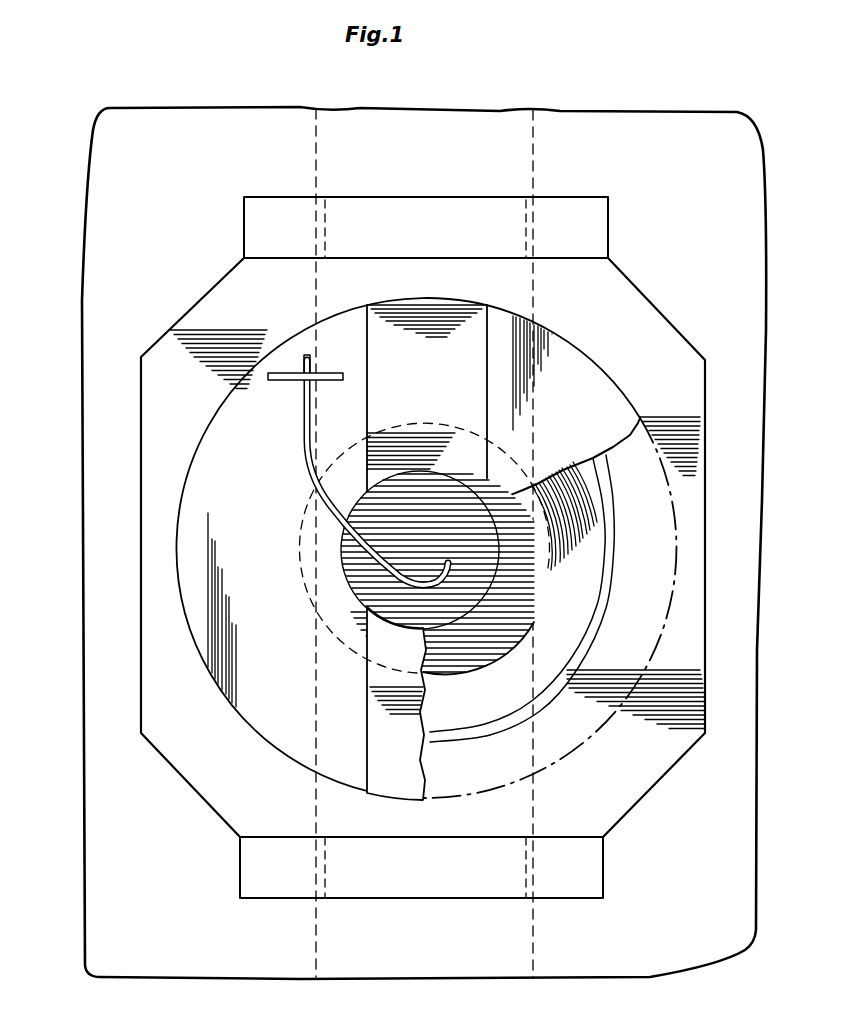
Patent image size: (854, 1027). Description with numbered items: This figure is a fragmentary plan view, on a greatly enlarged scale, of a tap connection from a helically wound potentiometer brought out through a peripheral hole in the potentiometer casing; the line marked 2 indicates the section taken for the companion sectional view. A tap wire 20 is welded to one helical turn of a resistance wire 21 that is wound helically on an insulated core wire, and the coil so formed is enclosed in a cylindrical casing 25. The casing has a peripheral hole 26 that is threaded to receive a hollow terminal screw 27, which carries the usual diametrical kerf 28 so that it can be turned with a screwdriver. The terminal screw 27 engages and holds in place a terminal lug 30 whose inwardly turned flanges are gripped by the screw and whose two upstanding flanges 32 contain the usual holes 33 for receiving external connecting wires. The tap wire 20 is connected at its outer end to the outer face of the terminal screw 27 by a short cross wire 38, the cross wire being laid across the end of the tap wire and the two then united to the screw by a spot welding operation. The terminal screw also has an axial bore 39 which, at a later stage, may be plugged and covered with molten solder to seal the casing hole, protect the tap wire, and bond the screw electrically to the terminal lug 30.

The section line 2- 2 is at (377, 1003).
The tap wire 20 is at (305, 460).
The resistance wire 21 is at (515, 605).
The cylindrical casing 25 is at (424, 543).
The peripheral hole 26 is at (545, 548).
The terminal screw 27 is at (612, 376).
The diametrical kerf 28 is at (372, 318).
The terminal lug 30 is at (648, 293).
The upstanding flanges 32 is at (449, 205).
The holes 33 is at (325, 214).
The cross wire 38 is at (272, 381).
The axial bore 39 is at (357, 578).